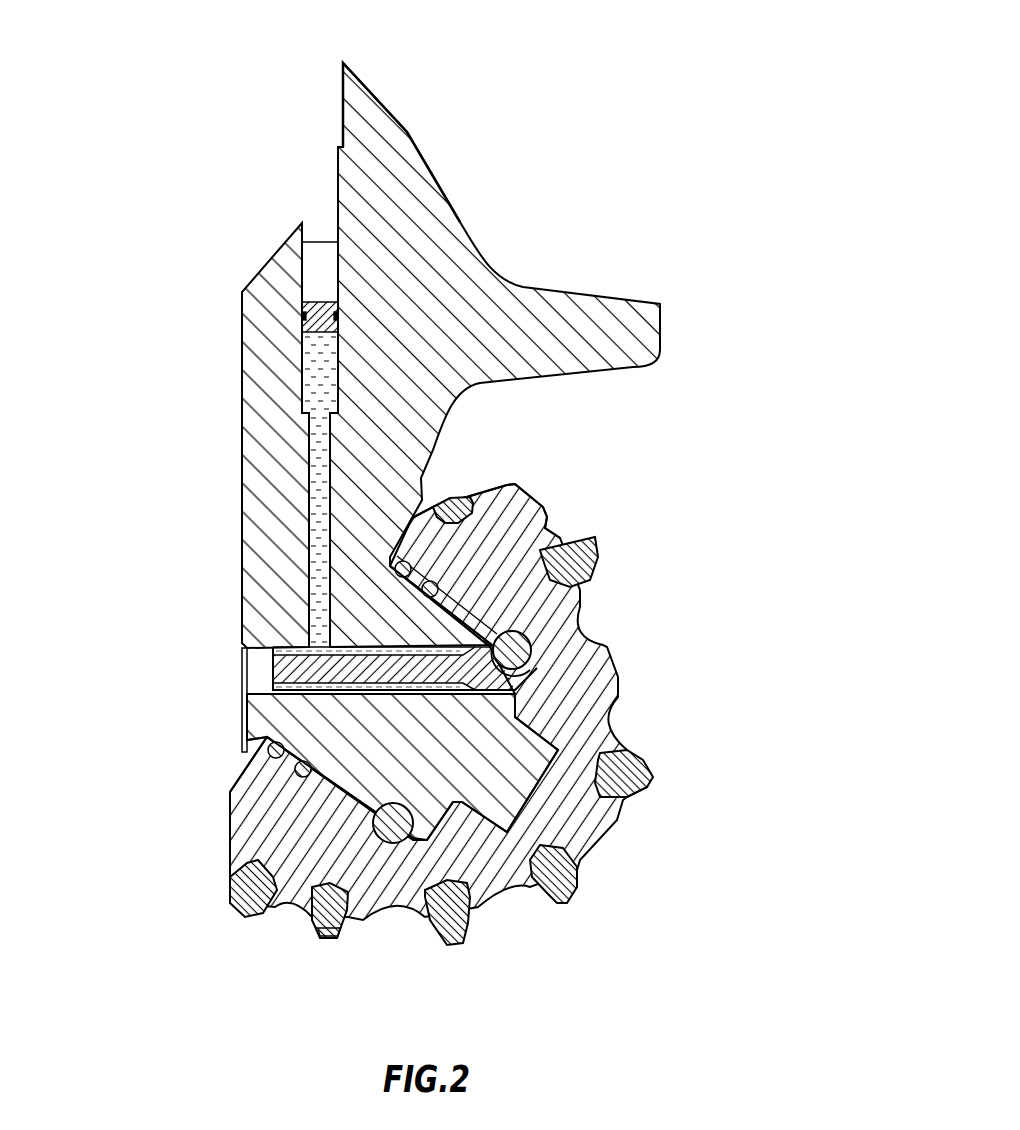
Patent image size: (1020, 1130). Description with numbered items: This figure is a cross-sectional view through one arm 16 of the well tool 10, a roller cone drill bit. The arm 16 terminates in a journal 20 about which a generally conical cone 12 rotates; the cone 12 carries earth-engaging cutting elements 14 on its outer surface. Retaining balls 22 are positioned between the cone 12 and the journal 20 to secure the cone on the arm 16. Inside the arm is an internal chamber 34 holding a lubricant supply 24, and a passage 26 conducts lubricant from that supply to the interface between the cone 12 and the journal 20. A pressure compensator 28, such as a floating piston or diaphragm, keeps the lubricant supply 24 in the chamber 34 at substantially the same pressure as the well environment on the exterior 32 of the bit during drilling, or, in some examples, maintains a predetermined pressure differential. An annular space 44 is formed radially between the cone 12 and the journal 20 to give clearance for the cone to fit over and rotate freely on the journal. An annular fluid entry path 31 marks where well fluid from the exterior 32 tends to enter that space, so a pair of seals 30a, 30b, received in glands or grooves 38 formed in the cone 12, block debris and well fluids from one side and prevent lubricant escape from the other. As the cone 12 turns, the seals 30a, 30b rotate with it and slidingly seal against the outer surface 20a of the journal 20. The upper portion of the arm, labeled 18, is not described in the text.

The well tool 10 is at (603, 66).
The cone 12 is at (620, 690).
The cutting elements 14 is at (598, 548).
The arm 16 is at (238, 530).
The blade top portion 18 is at (342, 92).
The journal 20 is at (335, 778).
The outer surface of the journal 20a is at (535, 522).
The retaining balls 22 is at (531, 645).
The lubricant supply 24 is at (320, 640).
The passage 26 is at (273, 668).
The pressure compensator 28 is at (302, 316).
The seal 30a is at (436, 505).
The seal 30b is at (460, 512).
The annular fluid entry path 31 is at (247, 742).
The exterior 32 is at (70, 667).
The internal chamber 34 is at (316, 566).
The glands or grooves 38 is at (287, 733).
The annular space 44 is at (320, 775).